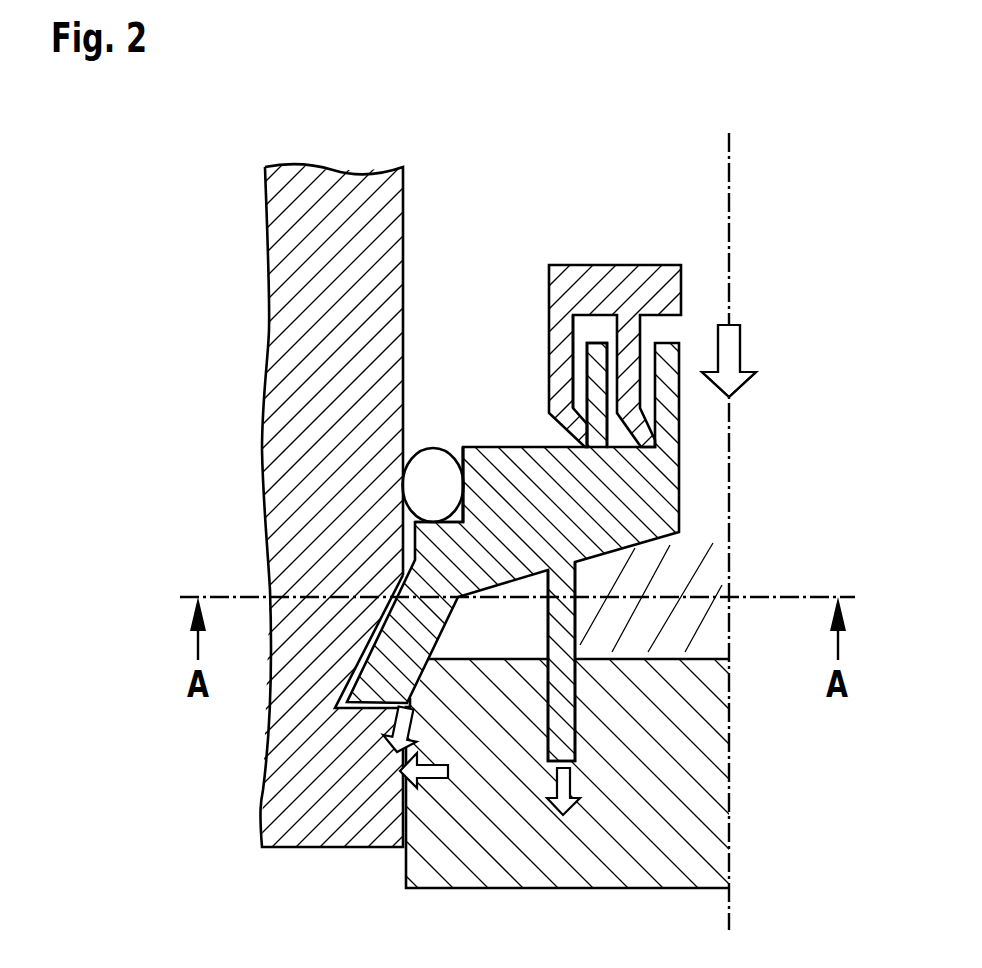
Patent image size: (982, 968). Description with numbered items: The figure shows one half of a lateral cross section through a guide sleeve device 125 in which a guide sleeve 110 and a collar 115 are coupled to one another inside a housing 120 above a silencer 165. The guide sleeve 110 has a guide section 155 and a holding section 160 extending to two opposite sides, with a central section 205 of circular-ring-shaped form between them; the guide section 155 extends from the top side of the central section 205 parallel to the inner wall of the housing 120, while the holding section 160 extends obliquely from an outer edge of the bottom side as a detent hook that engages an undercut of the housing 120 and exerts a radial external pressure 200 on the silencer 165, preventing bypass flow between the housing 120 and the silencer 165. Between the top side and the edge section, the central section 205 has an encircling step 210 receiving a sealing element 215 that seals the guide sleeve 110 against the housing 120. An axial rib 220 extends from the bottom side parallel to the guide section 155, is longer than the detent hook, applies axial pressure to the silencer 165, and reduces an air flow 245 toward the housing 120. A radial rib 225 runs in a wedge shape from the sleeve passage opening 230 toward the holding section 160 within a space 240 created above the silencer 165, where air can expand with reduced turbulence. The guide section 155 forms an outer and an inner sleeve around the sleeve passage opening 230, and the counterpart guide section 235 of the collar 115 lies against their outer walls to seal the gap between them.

The guide sleeve 110 is at (648, 472).
The collar 115 is at (612, 283).
The housing 120 is at (320, 220).
The guide sleeve device 125 is at (507, 240).
The guide section 155 is at (580, 363).
The holding section 160 is at (378, 618).
The silencer 165 is at (465, 840).
The radial external pressure 200 is at (400, 783).
The central section 205 is at (527, 473).
The step 210 is at (405, 480).
The sealing element 215 is at (422, 468).
The axial rib 220 is at (577, 752).
The radial rib 225 is at (522, 573).
The sleeve passage opening 230 is at (740, 342).
The counterpart guide section 235 is at (563, 422).
The space 240 is at (645, 597).
The air flow 245 is at (729, 361).